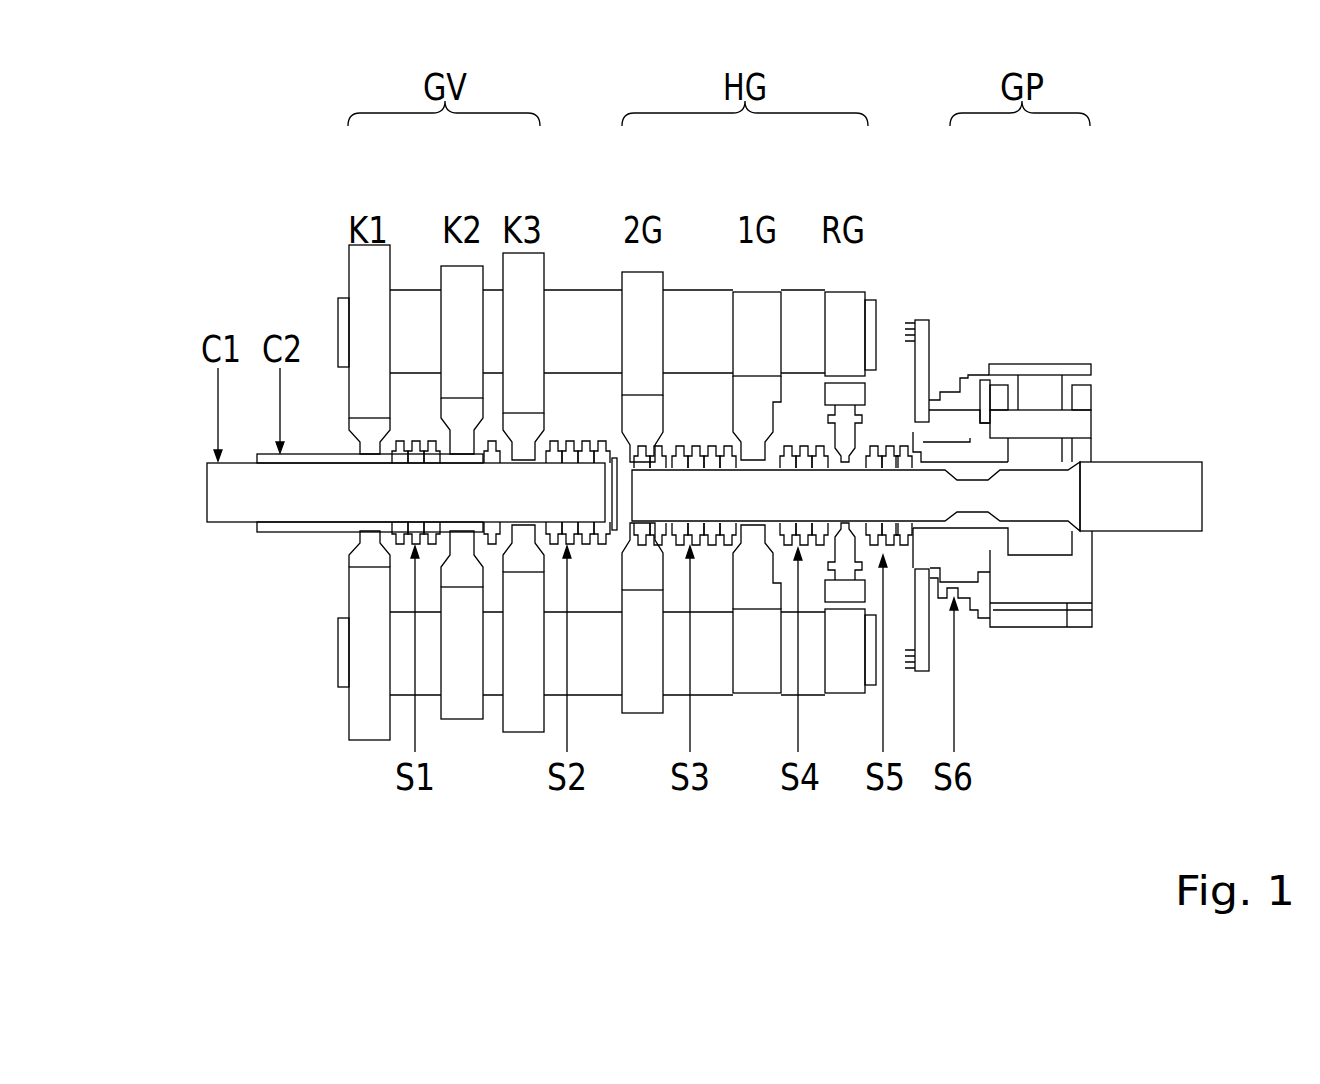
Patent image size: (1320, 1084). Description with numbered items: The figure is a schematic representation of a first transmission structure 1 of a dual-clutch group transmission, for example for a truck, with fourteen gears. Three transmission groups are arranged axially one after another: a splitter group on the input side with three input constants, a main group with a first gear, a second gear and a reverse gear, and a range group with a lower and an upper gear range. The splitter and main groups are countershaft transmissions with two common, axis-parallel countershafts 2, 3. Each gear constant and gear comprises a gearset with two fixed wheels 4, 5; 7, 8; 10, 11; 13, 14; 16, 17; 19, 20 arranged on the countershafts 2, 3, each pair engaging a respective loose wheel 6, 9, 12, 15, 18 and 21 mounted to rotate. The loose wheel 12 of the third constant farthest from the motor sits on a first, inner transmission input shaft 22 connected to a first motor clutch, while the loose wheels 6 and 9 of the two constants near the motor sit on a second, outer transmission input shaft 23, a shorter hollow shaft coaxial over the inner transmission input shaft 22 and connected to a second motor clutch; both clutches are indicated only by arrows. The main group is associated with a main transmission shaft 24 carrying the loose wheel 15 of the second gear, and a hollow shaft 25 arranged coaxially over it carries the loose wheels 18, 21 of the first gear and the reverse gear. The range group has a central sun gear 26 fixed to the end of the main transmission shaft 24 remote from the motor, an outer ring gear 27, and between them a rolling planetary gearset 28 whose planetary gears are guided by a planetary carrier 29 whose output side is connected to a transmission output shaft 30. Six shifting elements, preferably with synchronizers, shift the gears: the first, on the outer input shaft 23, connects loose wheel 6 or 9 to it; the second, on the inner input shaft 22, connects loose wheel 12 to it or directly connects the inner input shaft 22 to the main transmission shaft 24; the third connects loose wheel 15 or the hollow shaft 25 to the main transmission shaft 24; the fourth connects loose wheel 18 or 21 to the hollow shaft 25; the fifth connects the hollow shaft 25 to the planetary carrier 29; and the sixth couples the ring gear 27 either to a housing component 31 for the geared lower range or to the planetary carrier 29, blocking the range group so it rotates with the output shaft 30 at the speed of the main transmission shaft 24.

The transmission structure 1 is at (243, 272).
The countershaft 2 is at (338, 325).
The countershaft 3 is at (340, 657).
The fixed wheel 4 is at (347, 268).
The fixed wheel 5 is at (367, 742).
The loose wheel 6 is at (350, 560).
The fixed wheel 7 is at (438, 272).
The fixed wheel 8 is at (467, 720).
The loose wheel 9 is at (442, 553).
The fixed wheel 10 is at (501, 272).
The fixed wheel 11 is at (527, 737).
The loose wheel 12 is at (544, 560).
The fixed wheel 13 is at (620, 272).
The fixed wheel 14 is at (645, 714).
The loose wheel 15 is at (616, 535).
The fixed wheel 16 is at (752, 292).
The fixed wheel 17 is at (758, 697).
The loose wheel 18 is at (733, 565).
The fixed wheel 19 is at (847, 292).
The fixed wheel 20 is at (843, 695).
The loose wheel 21 is at (814, 695).
The inner transmission input shaft 22 is at (207, 524).
The outer transmission input shaft 23 is at (272, 534).
The main transmission shaft 24 is at (912, 462).
The hollow shaft 25 is at (738, 450).
The sun gear 26 is at (1017, 463).
The ring gear 27 is at (1015, 628).
The planetary gearset 28 is at (1060, 395).
The planetary carrier 29 is at (1067, 610).
The transmission output shaft 30 is at (1153, 462).
The housing component 31 is at (920, 672).